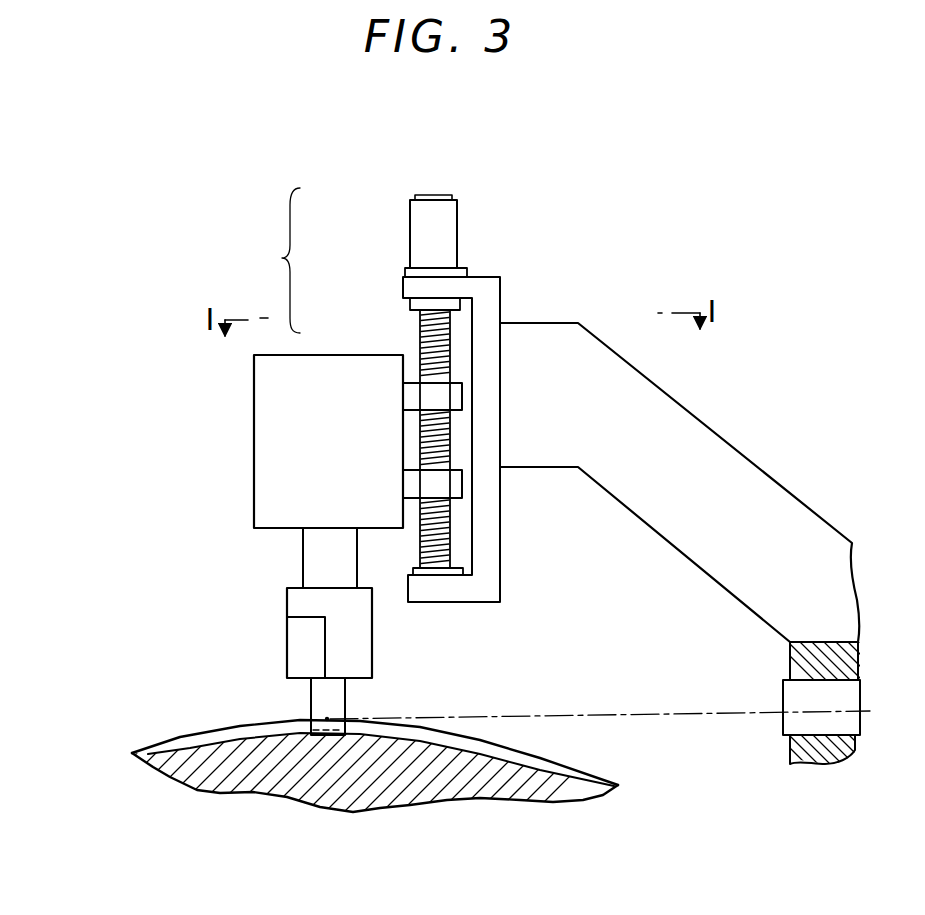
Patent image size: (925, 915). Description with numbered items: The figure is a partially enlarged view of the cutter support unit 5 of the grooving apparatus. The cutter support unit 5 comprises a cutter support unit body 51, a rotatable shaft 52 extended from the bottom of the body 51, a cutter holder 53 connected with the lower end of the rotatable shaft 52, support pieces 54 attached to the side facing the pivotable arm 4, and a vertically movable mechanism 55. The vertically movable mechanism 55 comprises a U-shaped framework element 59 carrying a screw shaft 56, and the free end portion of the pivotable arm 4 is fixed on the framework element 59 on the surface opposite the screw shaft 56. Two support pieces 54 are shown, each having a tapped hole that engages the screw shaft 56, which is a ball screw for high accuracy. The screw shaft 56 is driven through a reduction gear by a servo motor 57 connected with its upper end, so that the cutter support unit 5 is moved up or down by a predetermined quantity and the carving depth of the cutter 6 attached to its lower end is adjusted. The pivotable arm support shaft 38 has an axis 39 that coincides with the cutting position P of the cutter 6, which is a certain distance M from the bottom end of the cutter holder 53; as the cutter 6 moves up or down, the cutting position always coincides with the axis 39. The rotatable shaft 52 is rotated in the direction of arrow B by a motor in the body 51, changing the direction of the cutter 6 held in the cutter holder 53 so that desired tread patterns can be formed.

The cutter support unit 5 is at (152, 206).
The pivotable arm 4 is at (748, 455).
The pivotable arm support shaft 38 is at (785, 738).
The axis 39 is at (584, 716).
The cutter support unit body 51 is at (254, 476).
The rotatable shaft 52 is at (302, 545).
The cutter holder 53 is at (287, 630).
The support piece 54 is at (412, 480).
The vertically movable mechanism 55 is at (270, 260).
The screw shaft 56 is at (420, 333).
The motor 57 is at (410, 225).
The U-shaped framework element 59 is at (405, 288).
The cutter 6 is at (312, 717).
The cutting position P is at (326, 719).
The distance M is at (372, 678).
The arrow B is at (386, 554).